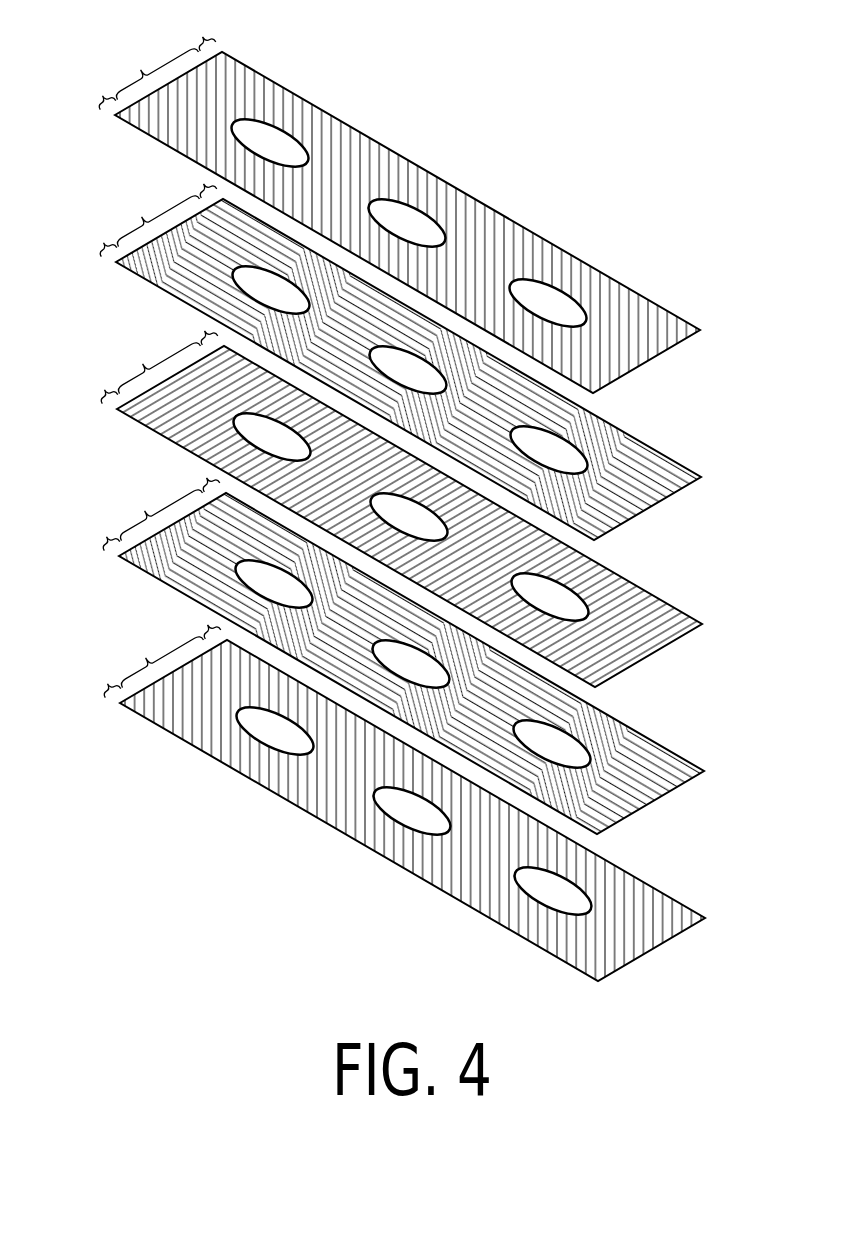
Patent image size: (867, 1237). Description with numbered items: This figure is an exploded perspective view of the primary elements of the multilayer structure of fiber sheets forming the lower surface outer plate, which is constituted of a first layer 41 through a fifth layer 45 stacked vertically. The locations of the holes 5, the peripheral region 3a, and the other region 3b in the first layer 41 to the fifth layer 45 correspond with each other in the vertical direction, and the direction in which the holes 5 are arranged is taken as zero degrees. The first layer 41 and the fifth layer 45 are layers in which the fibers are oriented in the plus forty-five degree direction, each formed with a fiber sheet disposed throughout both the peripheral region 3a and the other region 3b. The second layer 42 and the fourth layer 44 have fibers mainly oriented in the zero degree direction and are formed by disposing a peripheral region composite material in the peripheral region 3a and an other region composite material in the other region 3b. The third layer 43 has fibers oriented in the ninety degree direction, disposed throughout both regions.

The first layer 41 is at (447, 810).
The second layer 42 is at (446, 663).
The third layer 43 is at (444, 516).
The fourth layer 44 is at (709, 311).
The fifth layer 45 is at (442, 222).
The holes 5 is at (405, 217).
The peripheral region 3a is at (151, 357).
The other region 3b is at (134, 353).